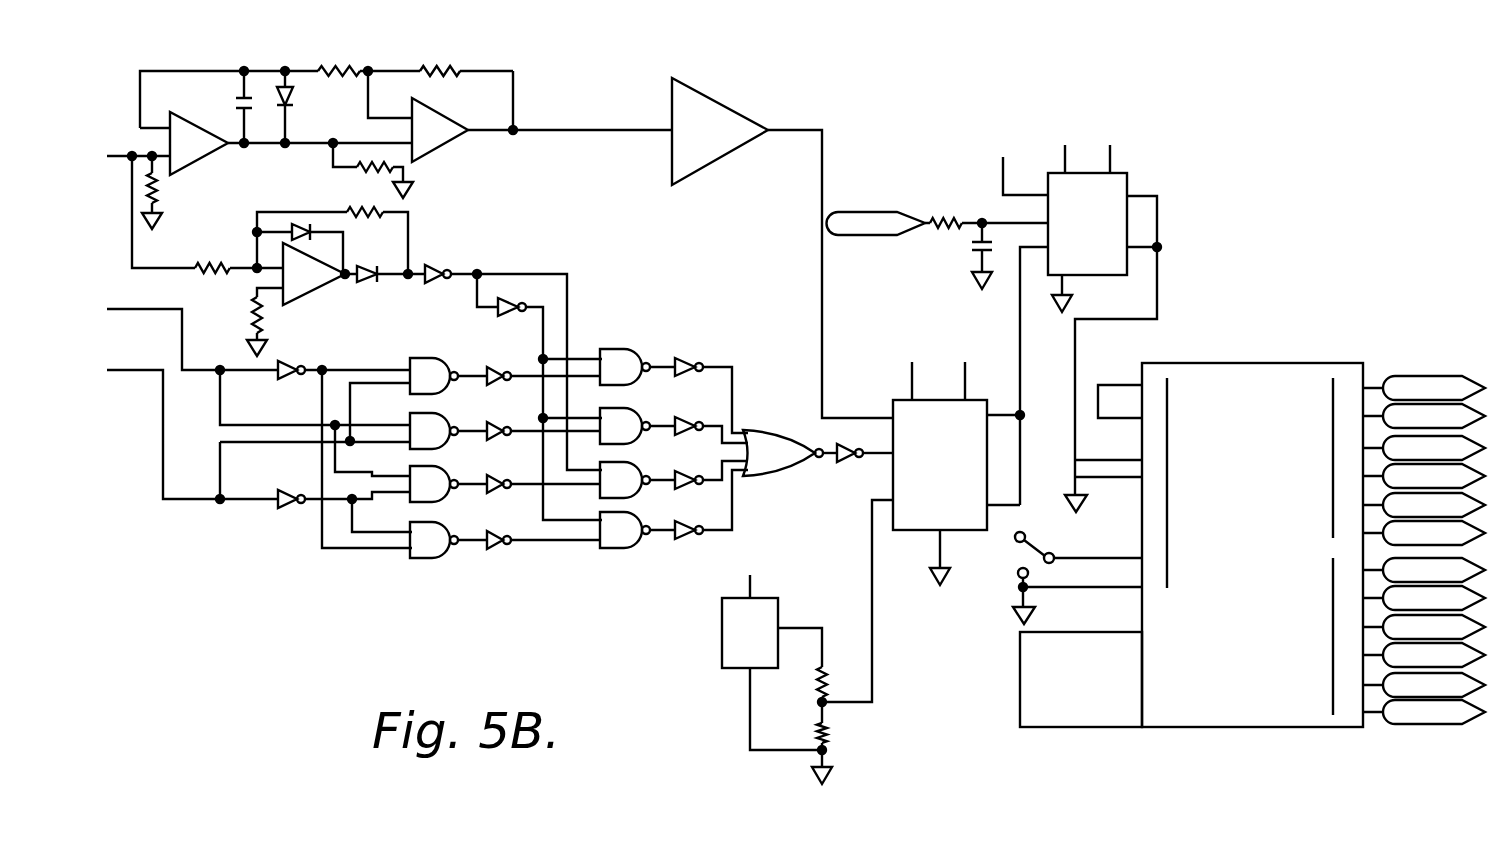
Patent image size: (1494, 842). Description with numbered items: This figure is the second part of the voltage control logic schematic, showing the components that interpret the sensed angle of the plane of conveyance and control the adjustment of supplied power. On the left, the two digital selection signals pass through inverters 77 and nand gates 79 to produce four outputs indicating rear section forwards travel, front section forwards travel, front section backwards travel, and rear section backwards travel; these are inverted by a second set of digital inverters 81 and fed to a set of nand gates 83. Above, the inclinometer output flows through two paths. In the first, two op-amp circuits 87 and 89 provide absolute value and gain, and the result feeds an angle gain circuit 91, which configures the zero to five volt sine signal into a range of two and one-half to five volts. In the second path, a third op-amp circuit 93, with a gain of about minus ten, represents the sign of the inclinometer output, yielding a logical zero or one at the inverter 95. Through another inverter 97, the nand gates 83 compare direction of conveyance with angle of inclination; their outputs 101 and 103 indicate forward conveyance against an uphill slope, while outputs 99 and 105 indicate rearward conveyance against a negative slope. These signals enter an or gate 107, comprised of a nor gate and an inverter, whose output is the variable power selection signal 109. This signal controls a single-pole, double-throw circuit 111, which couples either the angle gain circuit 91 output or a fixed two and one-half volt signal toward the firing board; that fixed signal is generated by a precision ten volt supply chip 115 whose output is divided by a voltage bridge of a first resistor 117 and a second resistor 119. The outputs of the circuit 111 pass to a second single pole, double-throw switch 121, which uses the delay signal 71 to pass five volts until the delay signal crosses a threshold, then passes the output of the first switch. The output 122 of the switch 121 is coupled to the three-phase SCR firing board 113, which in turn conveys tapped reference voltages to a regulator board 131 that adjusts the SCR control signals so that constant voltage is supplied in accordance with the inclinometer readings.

The delay signal 71 is at (938, 235).
The inverters 77 is at (290, 380).
The nand gates 79 is at (434, 389).
The second set of digital inverters 81 is at (497, 383).
The nand gates 83 is at (625, 380).
The op-amp circuit 87 is at (215, 100).
The op-amp circuit 89 is at (437, 148).
The angle gain circuit 91 is at (730, 110).
The third op-amp circuit 93 is at (307, 290).
The inverter 95 is at (440, 258).
The inverter 97 is at (505, 318).
The nand gate output 99 is at (723, 360).
The nand gate output 101 is at (715, 423).
The nand gate output 103 is at (712, 484).
The nand gate output 105 is at (718, 548).
The or gate 107 is at (833, 467).
The variable power selection signal 109 is at (873, 457).
The single-pole, double-throw circuit 111 is at (949, 478).
The three-phase SCR firing board 113 is at (1260, 648).
The precision 10 volt supply chip 115 is at (759, 650).
The first resistor 117 is at (823, 668).
The second resistor 119 is at (827, 745).
The second single pole, double-throw switch 121 is at (1096, 248).
The output of the second switch 122 is at (1158, 283).
The regulator board 131 is at (1105, 728).